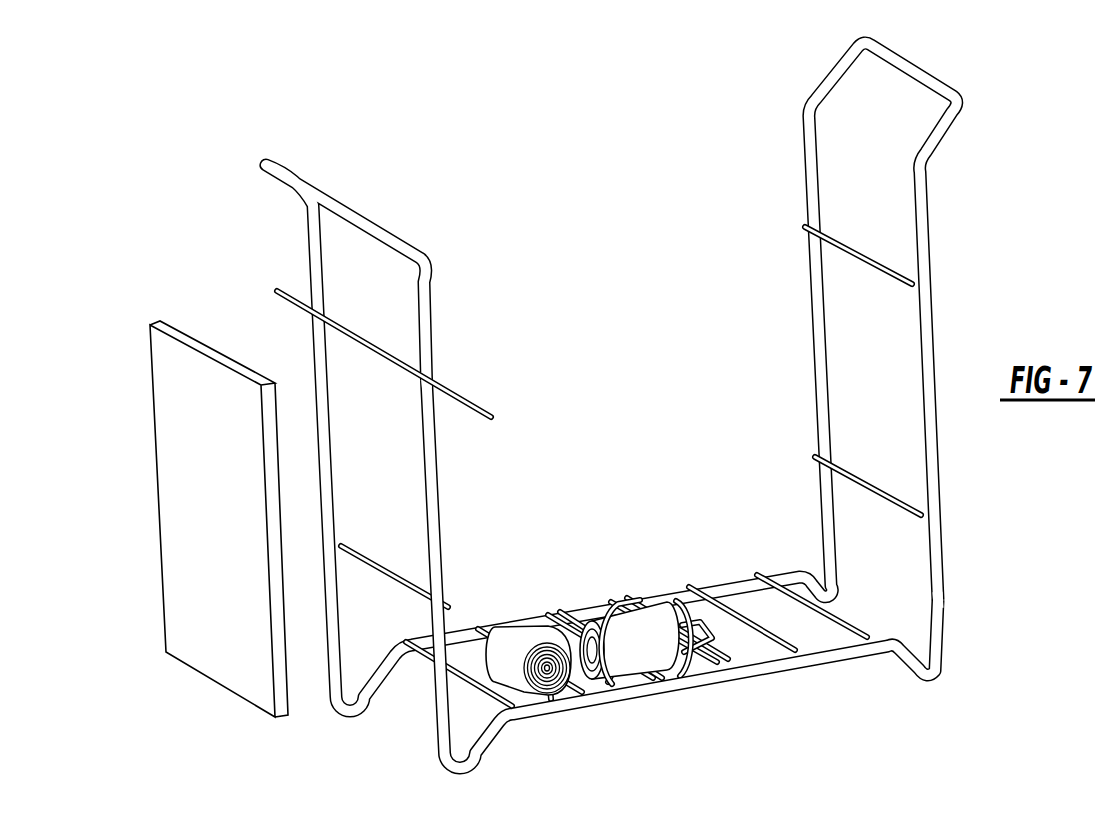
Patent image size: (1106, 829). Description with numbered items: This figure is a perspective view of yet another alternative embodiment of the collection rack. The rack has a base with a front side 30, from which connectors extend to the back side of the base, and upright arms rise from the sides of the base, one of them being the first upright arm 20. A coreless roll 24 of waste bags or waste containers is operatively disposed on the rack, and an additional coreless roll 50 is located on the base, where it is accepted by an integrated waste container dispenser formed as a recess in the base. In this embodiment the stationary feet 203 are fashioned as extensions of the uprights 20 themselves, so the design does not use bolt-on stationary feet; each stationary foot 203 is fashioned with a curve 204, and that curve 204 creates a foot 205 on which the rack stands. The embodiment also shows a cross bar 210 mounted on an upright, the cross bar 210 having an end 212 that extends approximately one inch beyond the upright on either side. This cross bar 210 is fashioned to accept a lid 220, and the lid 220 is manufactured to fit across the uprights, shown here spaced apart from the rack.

The first upright arm 20 is at (935, 424).
The coreless roll 24 is at (642, 618).
The front side 30 is at (758, 670).
The additional coreless roll 50 is at (518, 637).
The stationary feet 203 is at (474, 767).
The curve 204 is at (922, 680).
The foot 205 is at (940, 679).
The cross bar 210 is at (360, 342).
The end 212 is at (472, 412).
The lid 220 is at (215, 475).